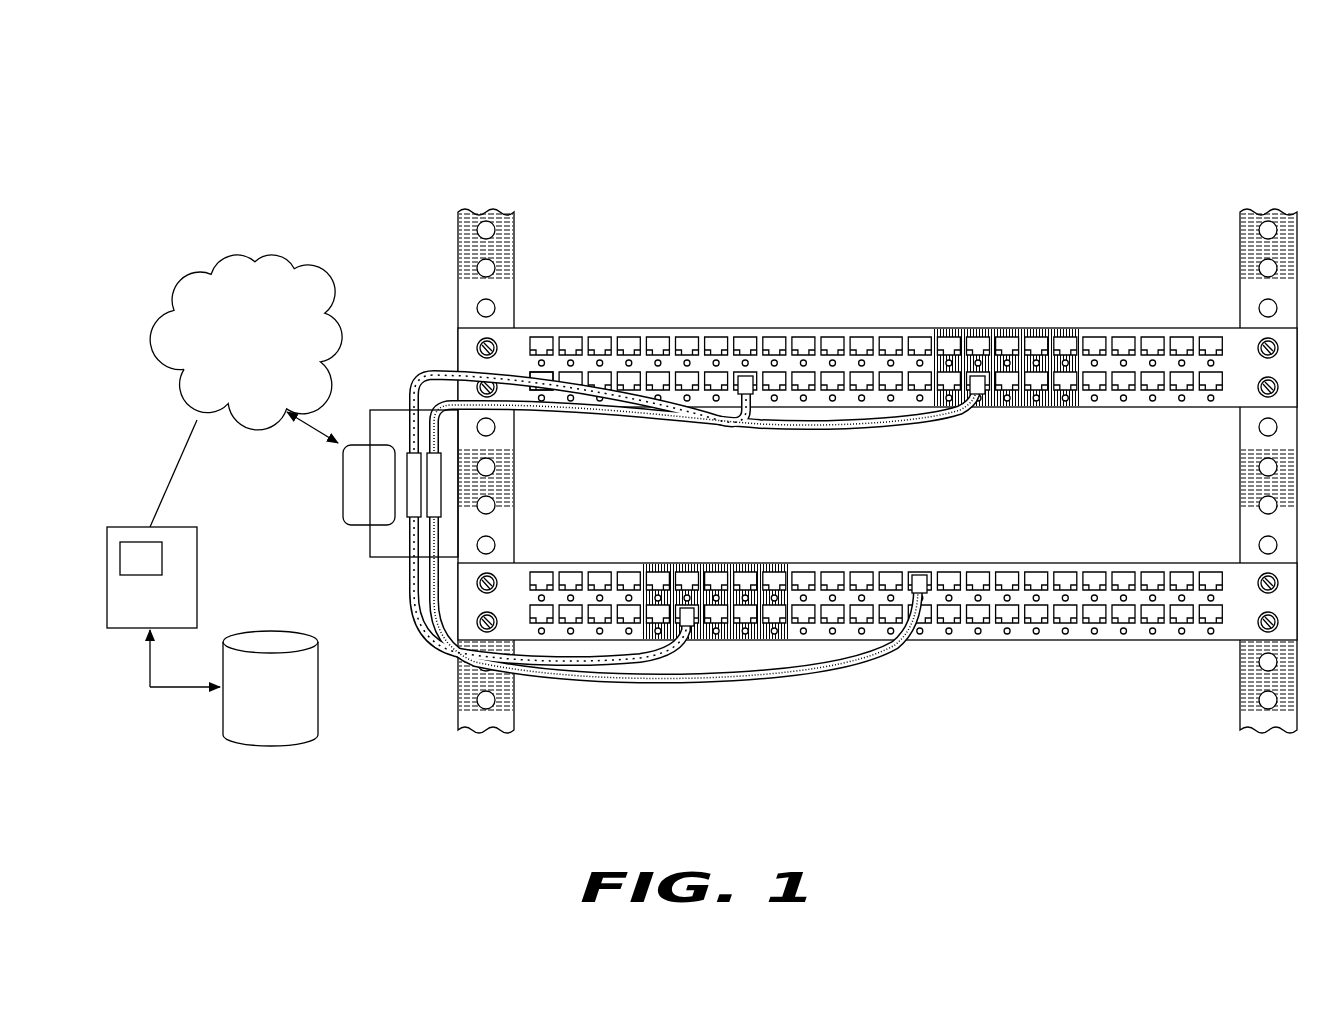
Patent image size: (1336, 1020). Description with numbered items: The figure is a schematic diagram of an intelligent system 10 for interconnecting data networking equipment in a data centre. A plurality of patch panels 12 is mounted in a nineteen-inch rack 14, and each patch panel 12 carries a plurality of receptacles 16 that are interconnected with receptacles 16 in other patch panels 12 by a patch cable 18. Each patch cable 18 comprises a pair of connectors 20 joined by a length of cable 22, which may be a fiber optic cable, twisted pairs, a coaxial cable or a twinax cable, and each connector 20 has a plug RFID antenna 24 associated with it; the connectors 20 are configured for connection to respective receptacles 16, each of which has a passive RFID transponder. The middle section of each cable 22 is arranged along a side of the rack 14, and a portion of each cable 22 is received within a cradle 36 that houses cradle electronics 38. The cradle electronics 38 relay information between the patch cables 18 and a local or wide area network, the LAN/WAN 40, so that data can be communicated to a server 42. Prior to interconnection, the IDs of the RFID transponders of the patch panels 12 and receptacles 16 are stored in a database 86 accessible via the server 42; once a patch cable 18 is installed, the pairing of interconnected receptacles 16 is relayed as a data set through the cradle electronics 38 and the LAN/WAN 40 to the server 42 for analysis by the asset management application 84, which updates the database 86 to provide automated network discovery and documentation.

The intelligent system for interconnecting data networking equipment 10 is at (834, 160).
The patch panel 12 is at (1037, 563).
The rack 14 is at (458, 270).
The receptacle 16 is at (920, 330).
The patch cable 18 is at (687, 684).
The connector 20 is at (688, 604).
The cable 22 is at (553, 395).
The plug RFID antenna 24 is at (407, 505).
The cradle 36 is at (388, 410).
The cradle electronics 38 is at (343, 482).
The LAN/WAN 40 is at (232, 262).
The server 42 is at (128, 630).
The asset management application 84 is at (133, 542).
The database 86 is at (270, 746).